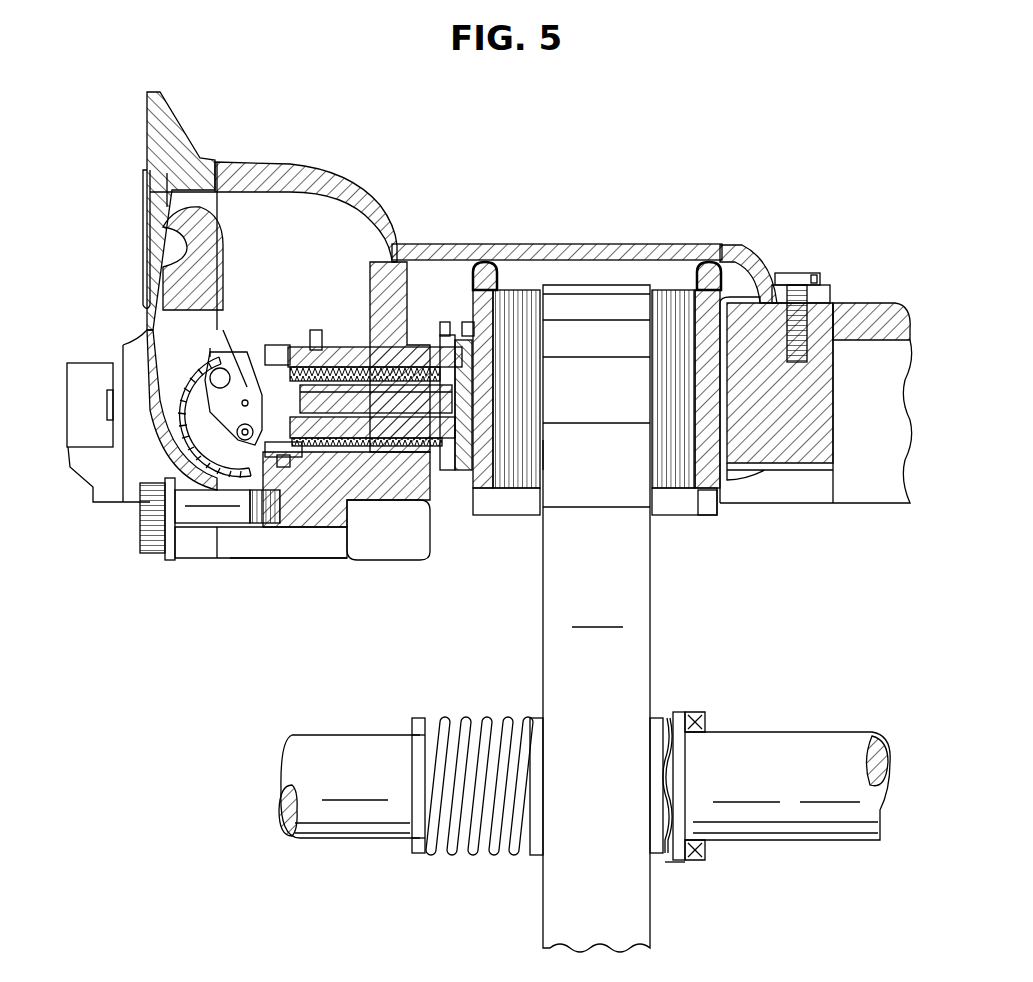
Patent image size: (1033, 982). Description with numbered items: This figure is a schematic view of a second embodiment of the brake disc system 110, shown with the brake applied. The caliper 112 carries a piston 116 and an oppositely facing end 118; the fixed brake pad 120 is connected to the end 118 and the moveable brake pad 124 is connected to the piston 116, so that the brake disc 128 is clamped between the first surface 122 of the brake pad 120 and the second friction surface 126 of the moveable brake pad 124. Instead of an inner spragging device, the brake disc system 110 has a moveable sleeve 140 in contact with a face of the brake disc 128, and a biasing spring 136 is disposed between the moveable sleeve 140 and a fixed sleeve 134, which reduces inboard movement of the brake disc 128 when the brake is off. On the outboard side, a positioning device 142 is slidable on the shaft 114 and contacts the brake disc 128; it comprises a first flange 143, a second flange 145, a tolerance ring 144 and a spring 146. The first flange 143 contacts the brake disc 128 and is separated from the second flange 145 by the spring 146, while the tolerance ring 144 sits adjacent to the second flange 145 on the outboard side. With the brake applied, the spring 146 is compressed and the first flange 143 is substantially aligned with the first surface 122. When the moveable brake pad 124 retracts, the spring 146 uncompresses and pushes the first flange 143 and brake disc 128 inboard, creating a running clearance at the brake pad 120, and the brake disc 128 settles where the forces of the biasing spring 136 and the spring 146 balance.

The brake disc system 110 is at (833, 250).
The caliper 112 is at (135, 267).
The shaft 114 is at (340, 825).
The piston 116 is at (343, 395).
The oppositely facing end 118 is at (754, 328).
The brake pad 120 is at (672, 305).
The first surface of the brake pad 122 is at (642, 322).
The moveable brake pad 124 is at (520, 307).
The second friction surface 126 is at (543, 453).
The brake disc 128 is at (635, 592).
The fixed sleeve 134 is at (420, 855).
The biasing spring 136 is at (482, 853).
The moveable sleeve 140 is at (530, 714).
The positioning device 142 is at (685, 875).
The first flange 143 is at (652, 722).
The tolerance ring 144 is at (700, 716).
The second flange 145 is at (685, 757).
The spring 146 is at (666, 720).